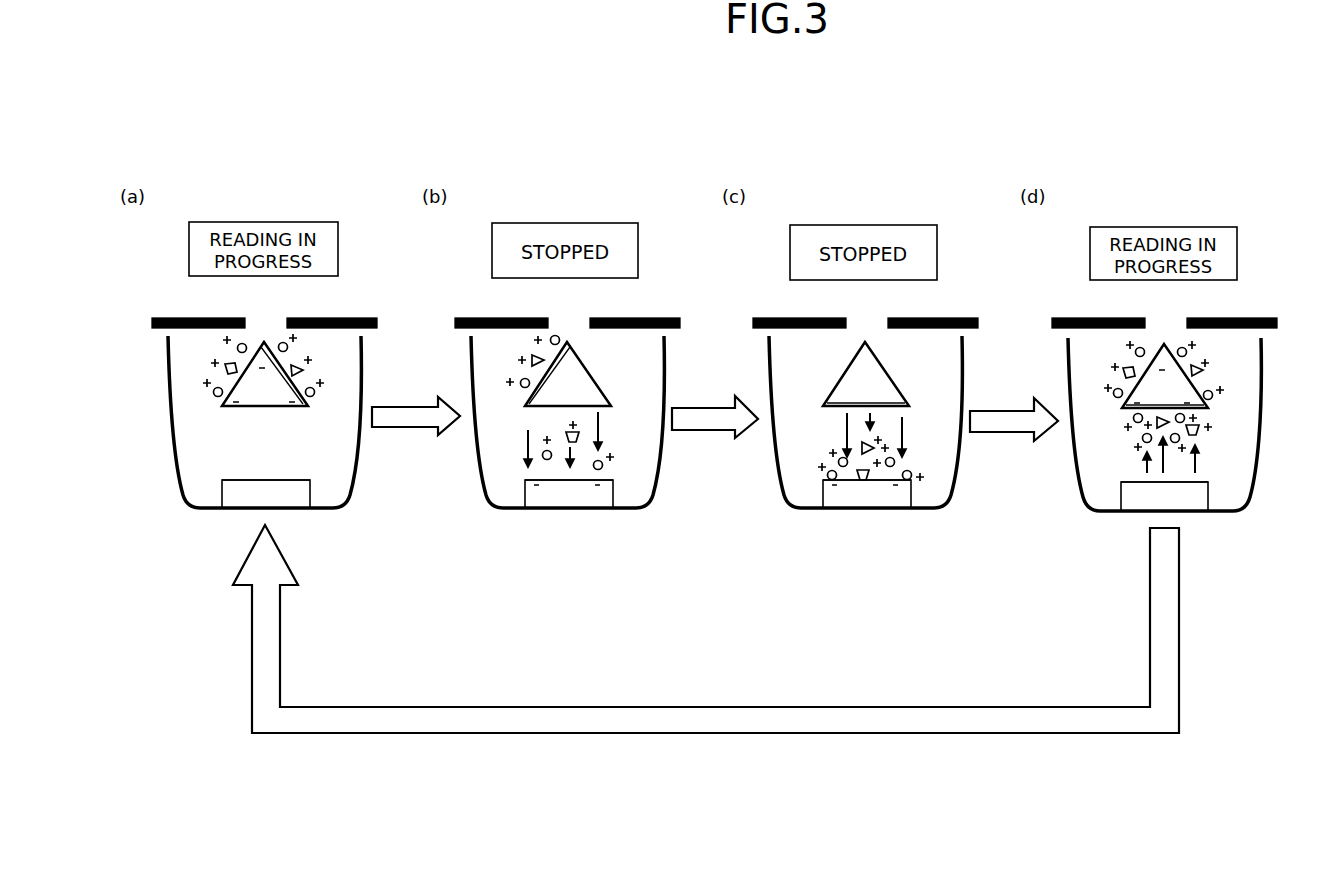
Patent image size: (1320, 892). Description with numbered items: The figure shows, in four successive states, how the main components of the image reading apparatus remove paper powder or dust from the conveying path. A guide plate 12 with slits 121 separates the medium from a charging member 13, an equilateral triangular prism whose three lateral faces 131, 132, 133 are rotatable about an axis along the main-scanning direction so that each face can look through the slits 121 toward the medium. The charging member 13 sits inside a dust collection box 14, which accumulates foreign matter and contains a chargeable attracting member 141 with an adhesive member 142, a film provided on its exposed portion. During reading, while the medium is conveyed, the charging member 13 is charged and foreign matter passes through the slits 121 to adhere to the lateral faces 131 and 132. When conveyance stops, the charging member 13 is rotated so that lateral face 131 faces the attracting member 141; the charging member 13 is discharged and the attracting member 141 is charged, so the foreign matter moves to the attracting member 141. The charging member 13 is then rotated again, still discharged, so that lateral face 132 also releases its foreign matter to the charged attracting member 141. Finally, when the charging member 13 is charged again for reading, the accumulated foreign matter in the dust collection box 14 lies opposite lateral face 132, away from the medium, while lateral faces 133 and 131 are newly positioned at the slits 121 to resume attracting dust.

The guide plate 12 is at (360, 318).
The slits 121 is at (244, 325).
The charging member 13 is at (292, 391).
The lateral face 131 is at (245, 362).
The lateral face 132 is at (290, 360).
The lateral face 133 is at (262, 408).
The dust collection box 14 is at (364, 460).
The attracting member 141 is at (306, 494).
The adhesive member 142 is at (240, 476).